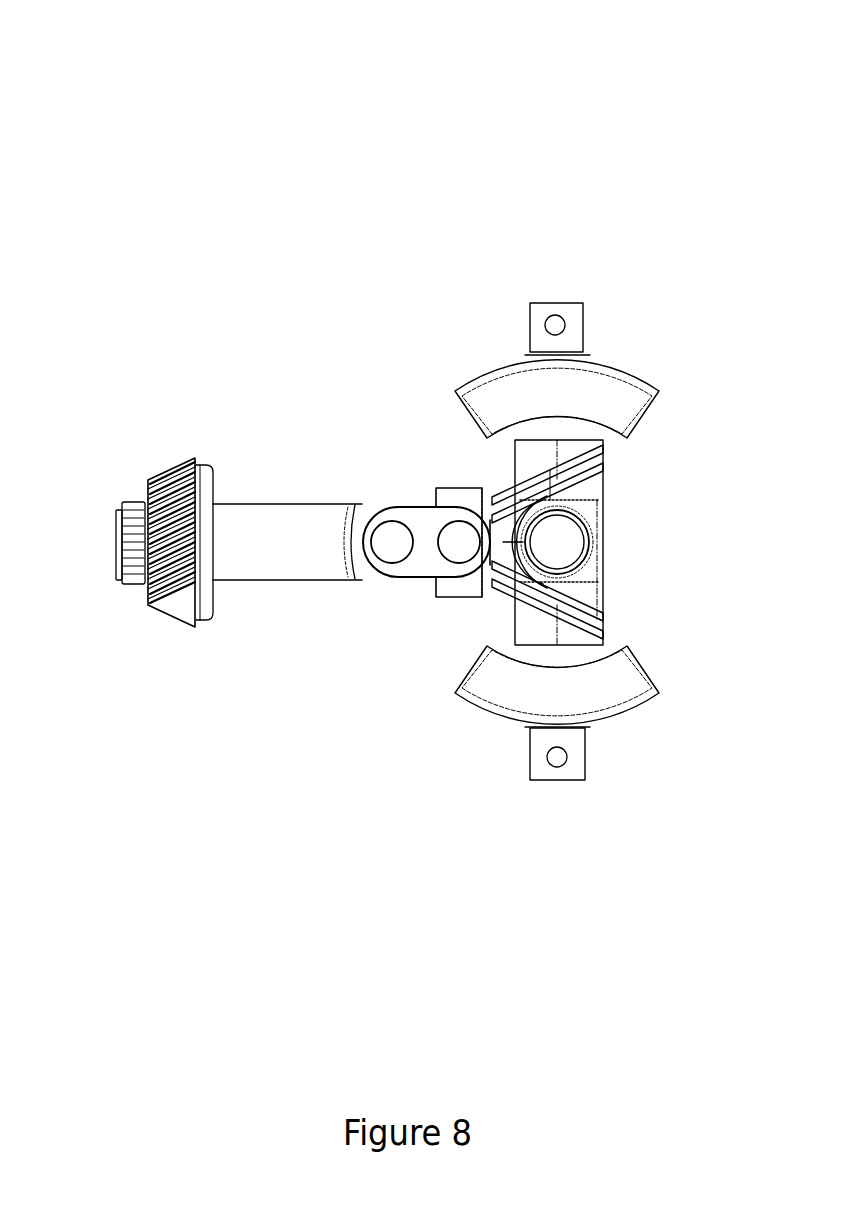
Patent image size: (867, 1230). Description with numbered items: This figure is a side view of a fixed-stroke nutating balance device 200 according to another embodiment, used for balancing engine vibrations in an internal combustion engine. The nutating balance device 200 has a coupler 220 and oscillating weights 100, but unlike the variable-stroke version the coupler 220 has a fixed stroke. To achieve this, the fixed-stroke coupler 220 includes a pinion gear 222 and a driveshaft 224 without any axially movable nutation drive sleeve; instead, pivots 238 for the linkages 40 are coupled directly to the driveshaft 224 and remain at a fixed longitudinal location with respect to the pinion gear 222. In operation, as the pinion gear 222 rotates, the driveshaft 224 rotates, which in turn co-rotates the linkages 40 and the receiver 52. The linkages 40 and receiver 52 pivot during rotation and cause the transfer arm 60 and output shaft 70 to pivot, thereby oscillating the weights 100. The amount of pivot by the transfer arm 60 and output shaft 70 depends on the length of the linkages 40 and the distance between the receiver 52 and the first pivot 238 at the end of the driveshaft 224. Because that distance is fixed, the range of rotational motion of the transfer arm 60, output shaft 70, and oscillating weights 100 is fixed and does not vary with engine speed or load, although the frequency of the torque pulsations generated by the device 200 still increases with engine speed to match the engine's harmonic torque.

The nutating balance device 200 is at (182, 84).
The coupler 220 is at (370, 284).
The pinion gear 222 is at (183, 465).
The driveshaft 224 is at (235, 510).
The linkages 40 is at (420, 520).
The pivots 238 is at (393, 552).
The receiver 52 is at (458, 497).
The transfer arm 60 is at (507, 574).
The output shaft 70 is at (593, 503).
The oscillating weight 100 is at (640, 393).